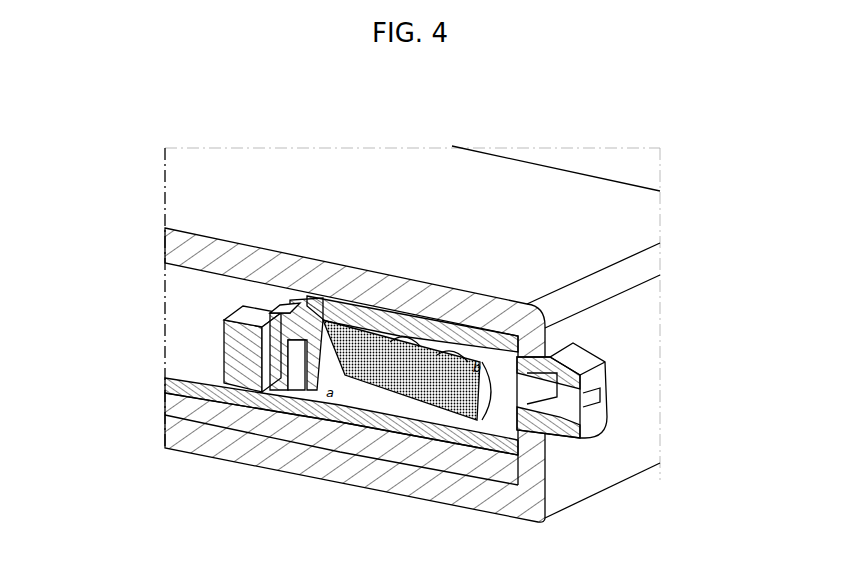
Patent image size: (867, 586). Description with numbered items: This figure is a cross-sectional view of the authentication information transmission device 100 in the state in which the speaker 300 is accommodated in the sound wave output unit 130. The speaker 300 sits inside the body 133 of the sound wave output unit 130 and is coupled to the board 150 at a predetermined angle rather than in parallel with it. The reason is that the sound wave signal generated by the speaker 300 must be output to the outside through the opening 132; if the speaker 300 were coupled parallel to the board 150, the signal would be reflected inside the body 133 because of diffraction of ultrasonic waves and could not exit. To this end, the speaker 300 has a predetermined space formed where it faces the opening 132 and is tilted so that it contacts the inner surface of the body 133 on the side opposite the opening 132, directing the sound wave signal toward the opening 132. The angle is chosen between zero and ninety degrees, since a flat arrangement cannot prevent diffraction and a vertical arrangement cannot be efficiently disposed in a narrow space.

The authentication information transmission device 100 is at (380, 168).
The sound wave output unit 130 is at (223, 345).
The opening 132 is at (598, 394).
The body 133 is at (432, 337).
The board 150 is at (460, 433).
The speaker 300 is at (393, 392).